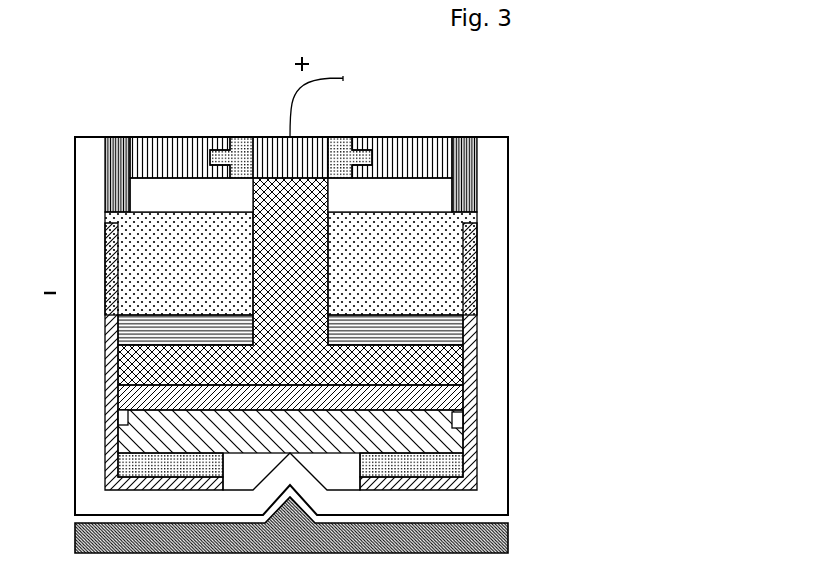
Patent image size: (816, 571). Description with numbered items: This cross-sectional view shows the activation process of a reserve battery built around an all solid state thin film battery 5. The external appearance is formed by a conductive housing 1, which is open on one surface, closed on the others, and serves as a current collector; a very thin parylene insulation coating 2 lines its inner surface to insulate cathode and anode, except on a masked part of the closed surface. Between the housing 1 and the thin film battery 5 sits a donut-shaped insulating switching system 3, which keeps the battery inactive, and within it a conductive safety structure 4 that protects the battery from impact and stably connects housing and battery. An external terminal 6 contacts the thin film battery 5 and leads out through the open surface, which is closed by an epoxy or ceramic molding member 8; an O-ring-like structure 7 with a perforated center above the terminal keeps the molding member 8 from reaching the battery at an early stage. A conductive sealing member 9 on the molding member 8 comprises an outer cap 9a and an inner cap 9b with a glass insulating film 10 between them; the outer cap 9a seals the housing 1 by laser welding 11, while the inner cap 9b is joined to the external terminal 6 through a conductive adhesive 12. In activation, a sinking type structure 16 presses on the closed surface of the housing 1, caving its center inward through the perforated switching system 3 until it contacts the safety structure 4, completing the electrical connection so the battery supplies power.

The housing 1 is at (493, 497).
The insulation coating 2 is at (472, 437).
The switching system 3 is at (450, 468).
The safety structure 4 is at (440, 420).
The all solid state thin film battery 5 is at (455, 398).
The external terminal 6 is at (452, 362).
The structure having a perforated center 7 is at (447, 328).
The molding member 8 is at (447, 255).
The sealing member 9 is at (229, 107).
The outer cap 9a is at (187, 147).
The inner cap 9b is at (273, 147).
The glass insulating film 10 is at (340, 137).
The laser welding 11 is at (477, 137).
The conductive adhesive 12 is at (253, 187).
The sinking type structure 16 is at (80, 539).